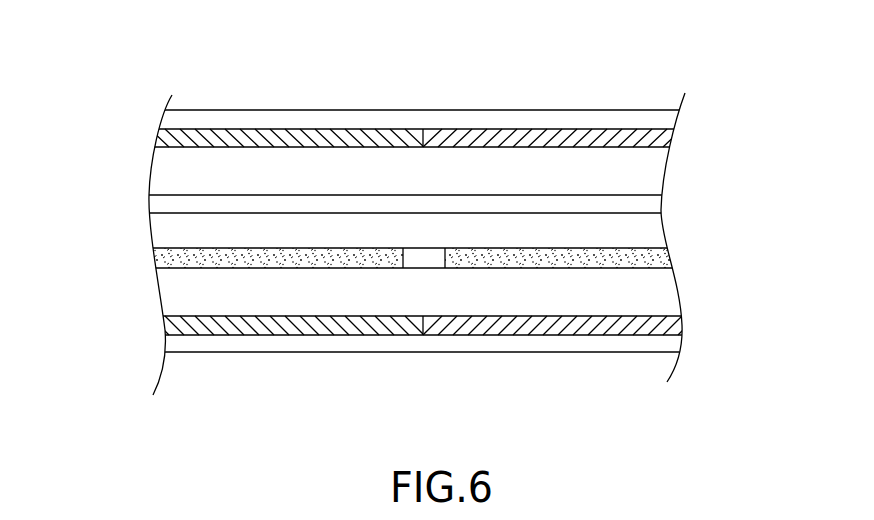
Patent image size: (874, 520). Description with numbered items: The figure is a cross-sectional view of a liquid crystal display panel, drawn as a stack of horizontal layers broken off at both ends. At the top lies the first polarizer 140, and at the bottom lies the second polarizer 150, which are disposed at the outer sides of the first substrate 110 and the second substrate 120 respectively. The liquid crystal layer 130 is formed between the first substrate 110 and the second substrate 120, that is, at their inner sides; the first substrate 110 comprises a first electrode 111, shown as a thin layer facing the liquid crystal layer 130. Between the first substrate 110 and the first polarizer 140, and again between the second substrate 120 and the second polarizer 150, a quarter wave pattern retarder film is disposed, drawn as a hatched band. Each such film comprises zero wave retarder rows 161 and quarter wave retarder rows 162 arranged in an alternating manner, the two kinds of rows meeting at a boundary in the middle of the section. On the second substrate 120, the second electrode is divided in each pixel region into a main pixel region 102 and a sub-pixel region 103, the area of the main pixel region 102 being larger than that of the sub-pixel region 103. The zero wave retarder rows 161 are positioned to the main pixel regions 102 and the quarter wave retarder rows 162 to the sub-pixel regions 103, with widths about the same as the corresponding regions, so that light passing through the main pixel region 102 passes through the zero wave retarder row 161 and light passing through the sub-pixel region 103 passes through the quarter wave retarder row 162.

The first polarizer 140 is at (655, 113).
The λ/4 retarder row 162 is at (672, 130).
The zero wave retarder row 161 is at (157, 142).
The first substrate 110 is at (662, 168).
The first electrode 111 is at (662, 198).
The liquid crystal layer 130 is at (660, 227).
The main pixel region 102 is at (157, 263).
The sub-pixel region 103 is at (672, 255).
The second substrate 120 is at (667, 300).
The second polarizer 150 is at (668, 340).